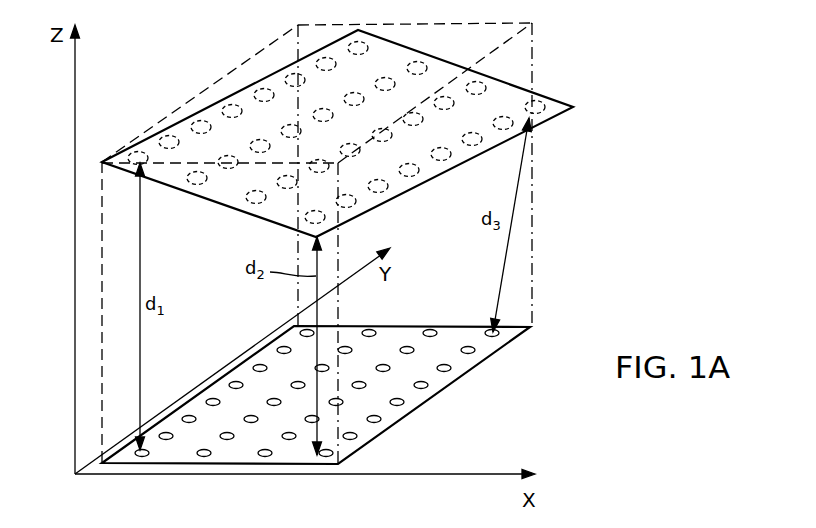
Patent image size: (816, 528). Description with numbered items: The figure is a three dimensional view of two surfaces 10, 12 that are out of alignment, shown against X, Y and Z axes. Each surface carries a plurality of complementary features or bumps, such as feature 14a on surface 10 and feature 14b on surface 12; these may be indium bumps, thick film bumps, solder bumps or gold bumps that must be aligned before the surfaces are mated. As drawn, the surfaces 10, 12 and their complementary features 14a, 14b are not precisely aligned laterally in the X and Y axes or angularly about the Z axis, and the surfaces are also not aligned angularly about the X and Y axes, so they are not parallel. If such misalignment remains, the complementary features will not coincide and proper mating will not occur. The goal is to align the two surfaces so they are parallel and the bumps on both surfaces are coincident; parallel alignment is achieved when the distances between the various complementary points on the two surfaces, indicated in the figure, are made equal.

The surface 10 is at (557, 96).
The surface 12 is at (510, 350).
The feature 14a is at (418, 178).
The feature 14b is at (427, 388).